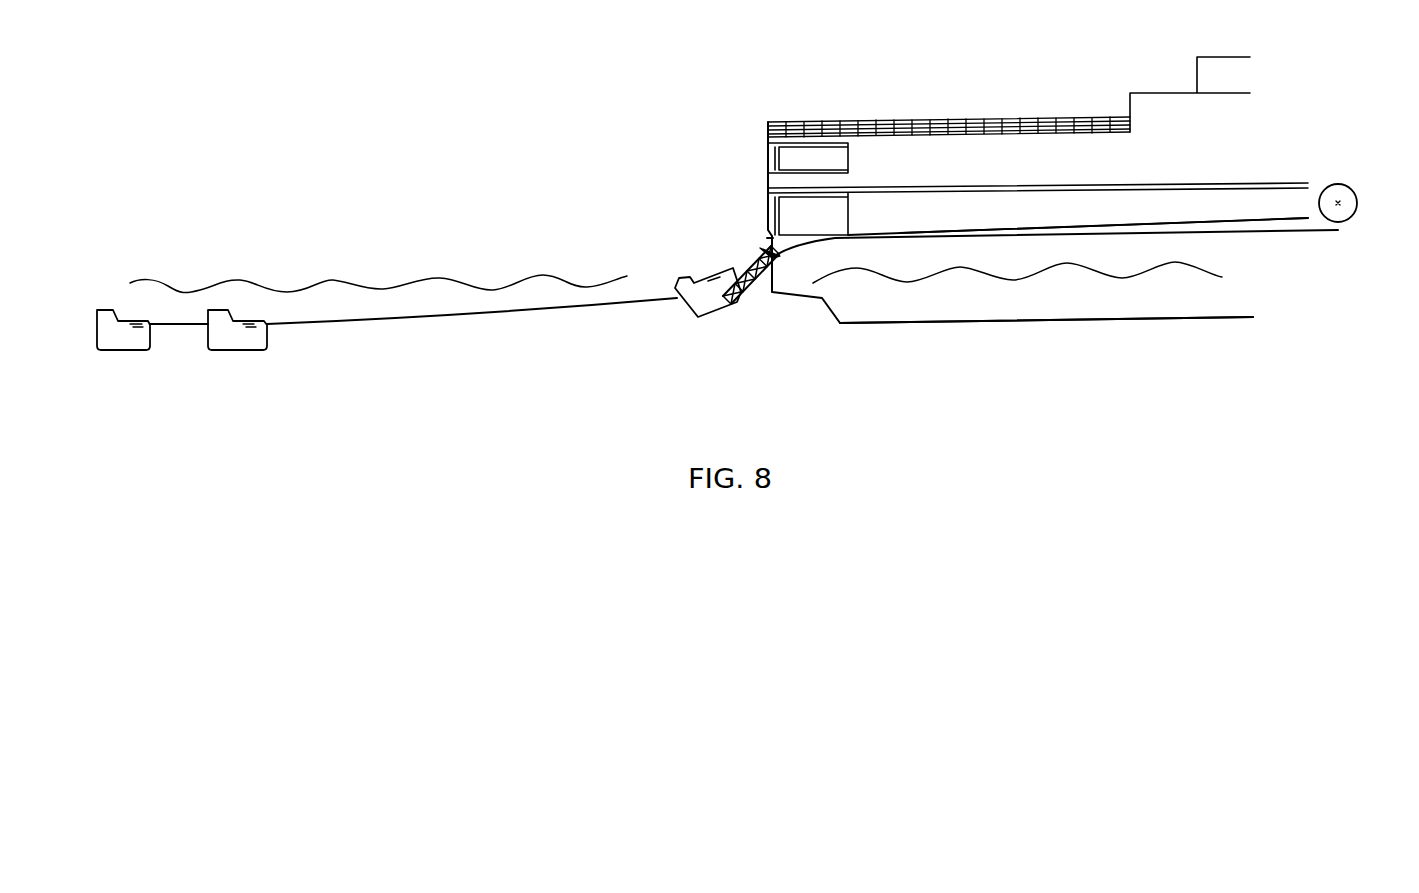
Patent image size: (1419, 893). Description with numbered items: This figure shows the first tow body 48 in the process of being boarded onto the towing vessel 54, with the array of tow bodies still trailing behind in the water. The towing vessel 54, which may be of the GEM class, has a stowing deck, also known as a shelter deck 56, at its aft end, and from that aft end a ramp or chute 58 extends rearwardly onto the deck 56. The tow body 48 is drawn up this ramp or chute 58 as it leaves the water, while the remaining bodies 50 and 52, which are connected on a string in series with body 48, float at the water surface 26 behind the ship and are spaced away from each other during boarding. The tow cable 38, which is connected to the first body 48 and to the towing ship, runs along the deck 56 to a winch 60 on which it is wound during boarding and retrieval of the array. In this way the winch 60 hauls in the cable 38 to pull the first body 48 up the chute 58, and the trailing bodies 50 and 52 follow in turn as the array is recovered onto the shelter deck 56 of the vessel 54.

The water surface 26 is at (393, 282).
The tow cable 38 is at (1183, 222).
The tow body 48 is at (690, 313).
The tow body 50 is at (237, 351).
The tow body 52 is at (120, 352).
The towing vessel 54 is at (1108, 320).
The shelter deck 56 is at (965, 255).
The ramp or chute 58 is at (740, 297).
The winch 60 is at (1351, 191).